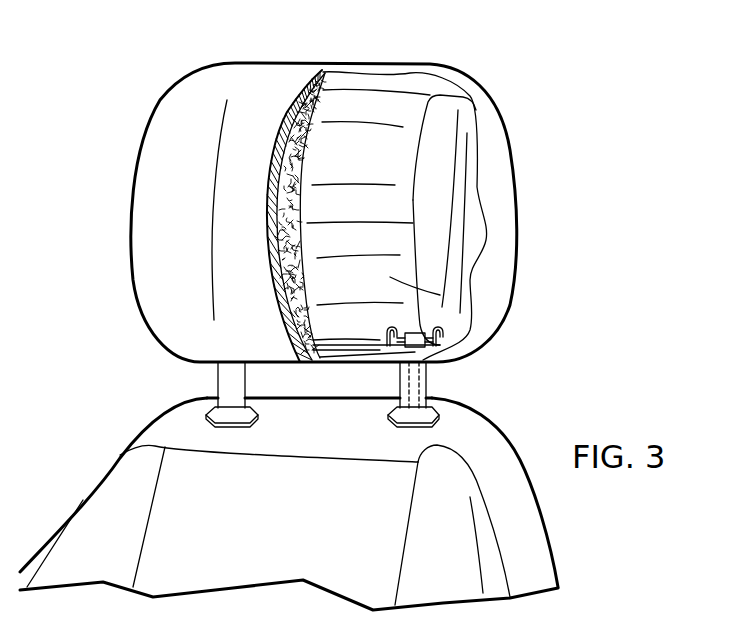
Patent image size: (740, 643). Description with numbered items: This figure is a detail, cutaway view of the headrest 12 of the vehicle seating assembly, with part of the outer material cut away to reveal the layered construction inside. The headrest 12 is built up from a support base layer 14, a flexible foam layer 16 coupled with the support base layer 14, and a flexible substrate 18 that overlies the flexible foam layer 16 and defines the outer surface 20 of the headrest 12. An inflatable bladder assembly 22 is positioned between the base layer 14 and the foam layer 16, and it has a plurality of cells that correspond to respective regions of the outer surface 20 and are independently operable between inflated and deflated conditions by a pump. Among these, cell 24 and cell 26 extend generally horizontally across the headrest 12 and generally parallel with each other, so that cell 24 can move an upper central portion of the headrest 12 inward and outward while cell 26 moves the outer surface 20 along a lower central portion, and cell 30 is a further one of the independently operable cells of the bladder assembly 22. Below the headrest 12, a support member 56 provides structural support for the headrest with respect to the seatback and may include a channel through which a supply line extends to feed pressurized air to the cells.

The headrest 12 is at (542, 81).
The support base layer 14 is at (503, 262).
The flexible foam layer 16 is at (318, 68).
The flexible substrate 18 is at (287, 110).
The outer surface 20 is at (247, 97).
The inflatable bladder assembly 22 is at (480, 193).
The cell 24 is at (387, 108).
The cell 26 is at (440, 295).
The cell 30 is at (470, 227).
The support member 56 is at (223, 382).